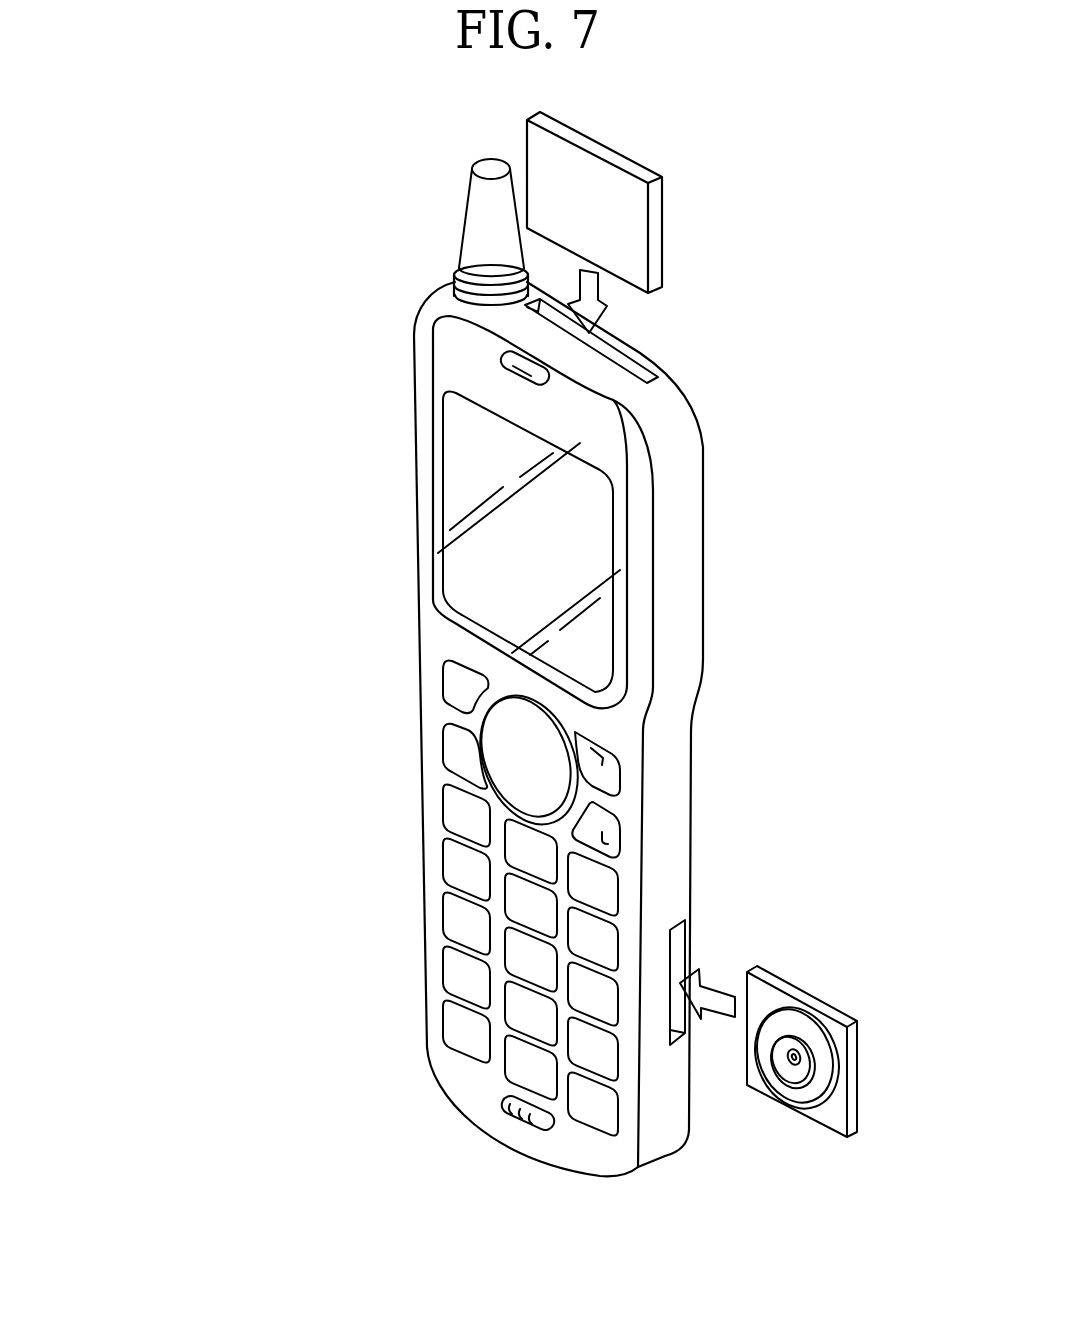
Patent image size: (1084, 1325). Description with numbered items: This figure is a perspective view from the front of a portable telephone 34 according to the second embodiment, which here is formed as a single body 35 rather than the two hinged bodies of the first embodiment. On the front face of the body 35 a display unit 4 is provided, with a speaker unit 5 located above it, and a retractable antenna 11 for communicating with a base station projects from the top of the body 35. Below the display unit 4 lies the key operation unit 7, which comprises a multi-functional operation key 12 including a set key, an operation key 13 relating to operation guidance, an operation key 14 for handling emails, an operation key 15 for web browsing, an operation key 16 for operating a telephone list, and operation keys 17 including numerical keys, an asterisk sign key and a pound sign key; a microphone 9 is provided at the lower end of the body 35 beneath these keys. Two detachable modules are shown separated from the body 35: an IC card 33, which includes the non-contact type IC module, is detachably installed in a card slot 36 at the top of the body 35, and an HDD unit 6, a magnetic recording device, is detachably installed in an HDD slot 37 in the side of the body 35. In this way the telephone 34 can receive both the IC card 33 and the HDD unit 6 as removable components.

The display unit 4 is at (497, 510).
The speaker unit 5 is at (505, 365).
The HDD unit 6 is at (828, 1010).
The key operation unit 7 is at (420, 815).
The microphone 9 is at (512, 1107).
The retractable antenna 11 is at (478, 228).
The multi-functional operation key 12 is at (497, 740).
The operation key relating to operation guidance 13 is at (443, 680).
The operation key for handling emails 14 is at (452, 762).
The operation key for web browsing 15 is at (593, 750).
The operation key for operating a telephone list 16 is at (600, 843).
The operation keys 17 is at (520, 962).
The IC card 33 is at (660, 237).
The portable telephone 34 is at (343, 542).
The body 35 is at (703, 527).
The card slot 36 is at (635, 345).
The HDD slot 37 is at (678, 953).